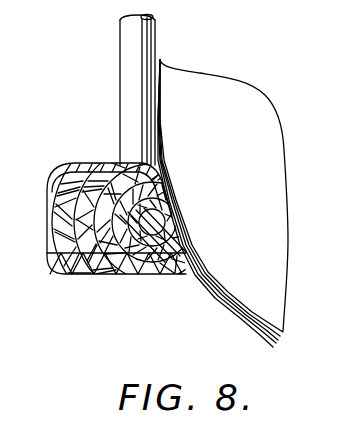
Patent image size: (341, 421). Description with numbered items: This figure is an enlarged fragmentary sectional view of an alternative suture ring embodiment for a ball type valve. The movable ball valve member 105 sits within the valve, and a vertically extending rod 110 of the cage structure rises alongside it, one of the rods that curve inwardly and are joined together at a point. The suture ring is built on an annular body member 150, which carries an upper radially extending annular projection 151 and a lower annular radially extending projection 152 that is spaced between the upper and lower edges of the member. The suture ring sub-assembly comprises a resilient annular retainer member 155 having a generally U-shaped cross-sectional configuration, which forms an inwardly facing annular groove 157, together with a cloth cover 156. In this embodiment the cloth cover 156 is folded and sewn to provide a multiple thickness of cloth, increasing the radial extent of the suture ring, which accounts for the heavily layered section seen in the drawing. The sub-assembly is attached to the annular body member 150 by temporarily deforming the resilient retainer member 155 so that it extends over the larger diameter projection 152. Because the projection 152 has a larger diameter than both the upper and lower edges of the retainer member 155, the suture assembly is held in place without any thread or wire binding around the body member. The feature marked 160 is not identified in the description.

The movable ball valve member 105 is at (211, 77).
The vertically extending rod 110 is at (120, 67).
The annular body member 150 is at (162, 194).
The upper radially extending annular projection 151 is at (118, 165).
The lower annular radially extending projection 152 is at (163, 212).
The resilient annular retainer member 155 is at (121, 250).
The cloth cover 156 is at (56, 193).
The inwardly facing annular groove 157 is at (135, 227).
The wedge 160 is at (186, 275).